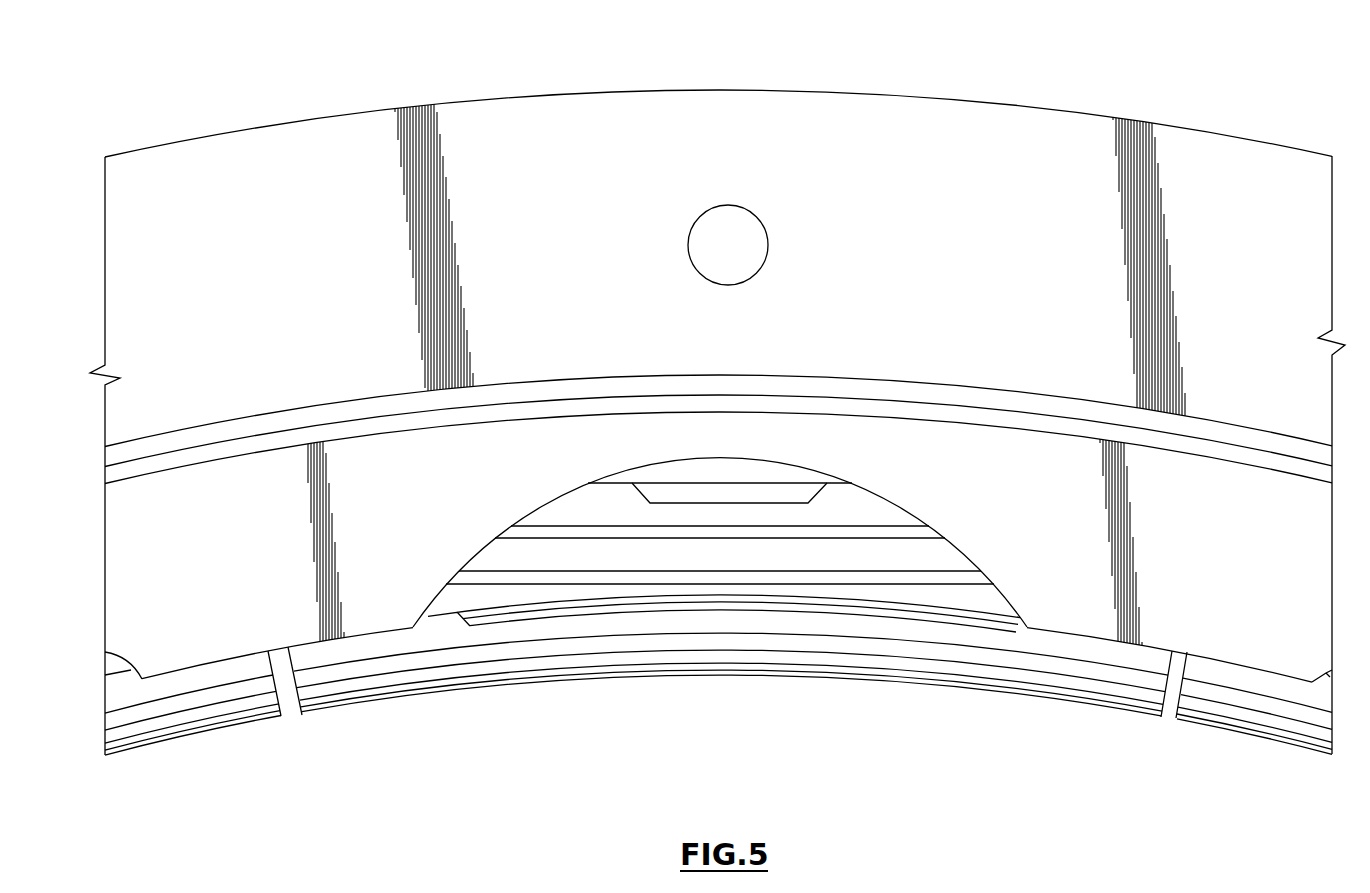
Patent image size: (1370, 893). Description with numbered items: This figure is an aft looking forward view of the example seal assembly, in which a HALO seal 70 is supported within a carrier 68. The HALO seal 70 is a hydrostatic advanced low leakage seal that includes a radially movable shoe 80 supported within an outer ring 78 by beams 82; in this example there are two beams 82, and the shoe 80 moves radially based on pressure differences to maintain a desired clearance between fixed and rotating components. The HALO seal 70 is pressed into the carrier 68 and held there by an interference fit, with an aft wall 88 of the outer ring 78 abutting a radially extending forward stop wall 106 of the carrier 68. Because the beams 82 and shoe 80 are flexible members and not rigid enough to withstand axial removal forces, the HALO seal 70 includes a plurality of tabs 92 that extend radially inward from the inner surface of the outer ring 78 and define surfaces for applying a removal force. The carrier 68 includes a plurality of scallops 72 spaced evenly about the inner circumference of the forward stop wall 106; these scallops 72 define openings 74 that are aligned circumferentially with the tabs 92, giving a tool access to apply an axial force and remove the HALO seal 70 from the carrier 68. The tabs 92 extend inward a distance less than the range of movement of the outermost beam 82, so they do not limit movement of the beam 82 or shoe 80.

The carrier 68 is at (372, 232).
The HALO seal 70 is at (1200, 89).
The scallop 72 is at (443, 602).
The opening 74 is at (680, 698).
The outer ring 78 is at (677, 488).
The shoe 80 is at (557, 657).
The beam 82 is at (902, 530).
The aft wall 88 is at (735, 473).
The tab 92 is at (758, 492).
The forward stop wall 106 is at (285, 583).